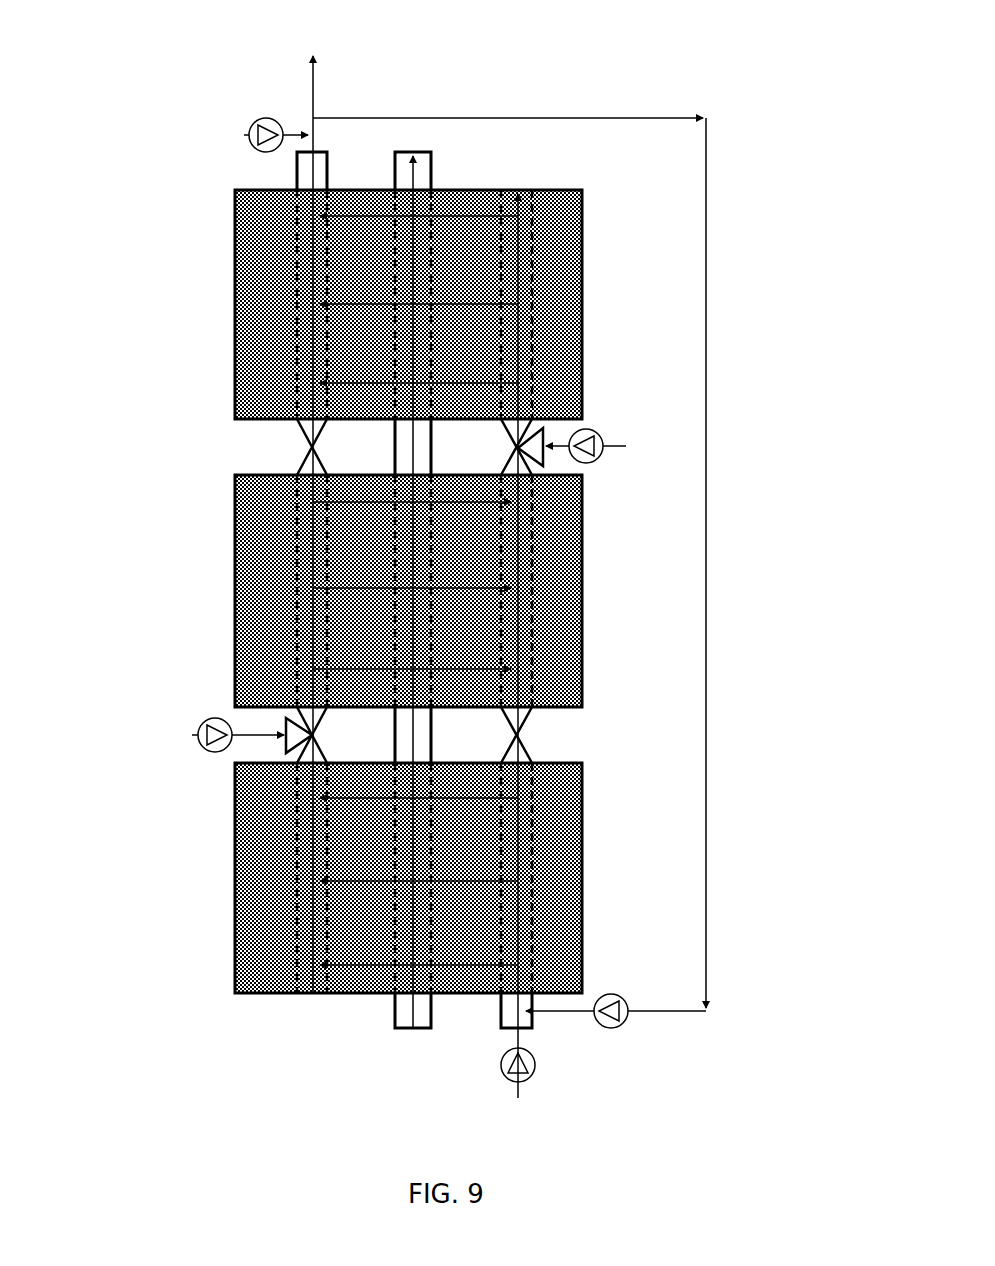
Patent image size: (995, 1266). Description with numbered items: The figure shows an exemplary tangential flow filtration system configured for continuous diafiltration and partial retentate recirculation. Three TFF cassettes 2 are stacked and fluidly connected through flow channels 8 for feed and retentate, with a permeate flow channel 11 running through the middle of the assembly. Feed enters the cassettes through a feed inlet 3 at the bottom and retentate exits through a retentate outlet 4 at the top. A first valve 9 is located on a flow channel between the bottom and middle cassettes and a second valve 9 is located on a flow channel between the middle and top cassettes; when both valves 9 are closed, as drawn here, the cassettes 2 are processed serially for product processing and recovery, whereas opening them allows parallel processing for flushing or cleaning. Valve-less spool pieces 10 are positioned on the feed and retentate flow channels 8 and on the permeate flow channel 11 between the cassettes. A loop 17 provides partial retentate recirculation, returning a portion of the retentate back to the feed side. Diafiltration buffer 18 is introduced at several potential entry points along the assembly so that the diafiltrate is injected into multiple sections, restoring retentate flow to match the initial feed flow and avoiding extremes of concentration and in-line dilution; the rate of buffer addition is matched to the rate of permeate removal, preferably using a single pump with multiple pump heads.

The TFF cassette 2 is at (575, 297).
The feed inlet 3 is at (525, 1017).
The retentate outlet 4 is at (285, 157).
The flow channel 8 is at (288, 887).
The valve 9 is at (218, 438).
The valve-less spool piece 10 is at (395, 460).
The permeate flow channel 11 is at (425, 235).
The loop 17 is at (705, 518).
The diafiltration buffer 18 is at (148, 118).